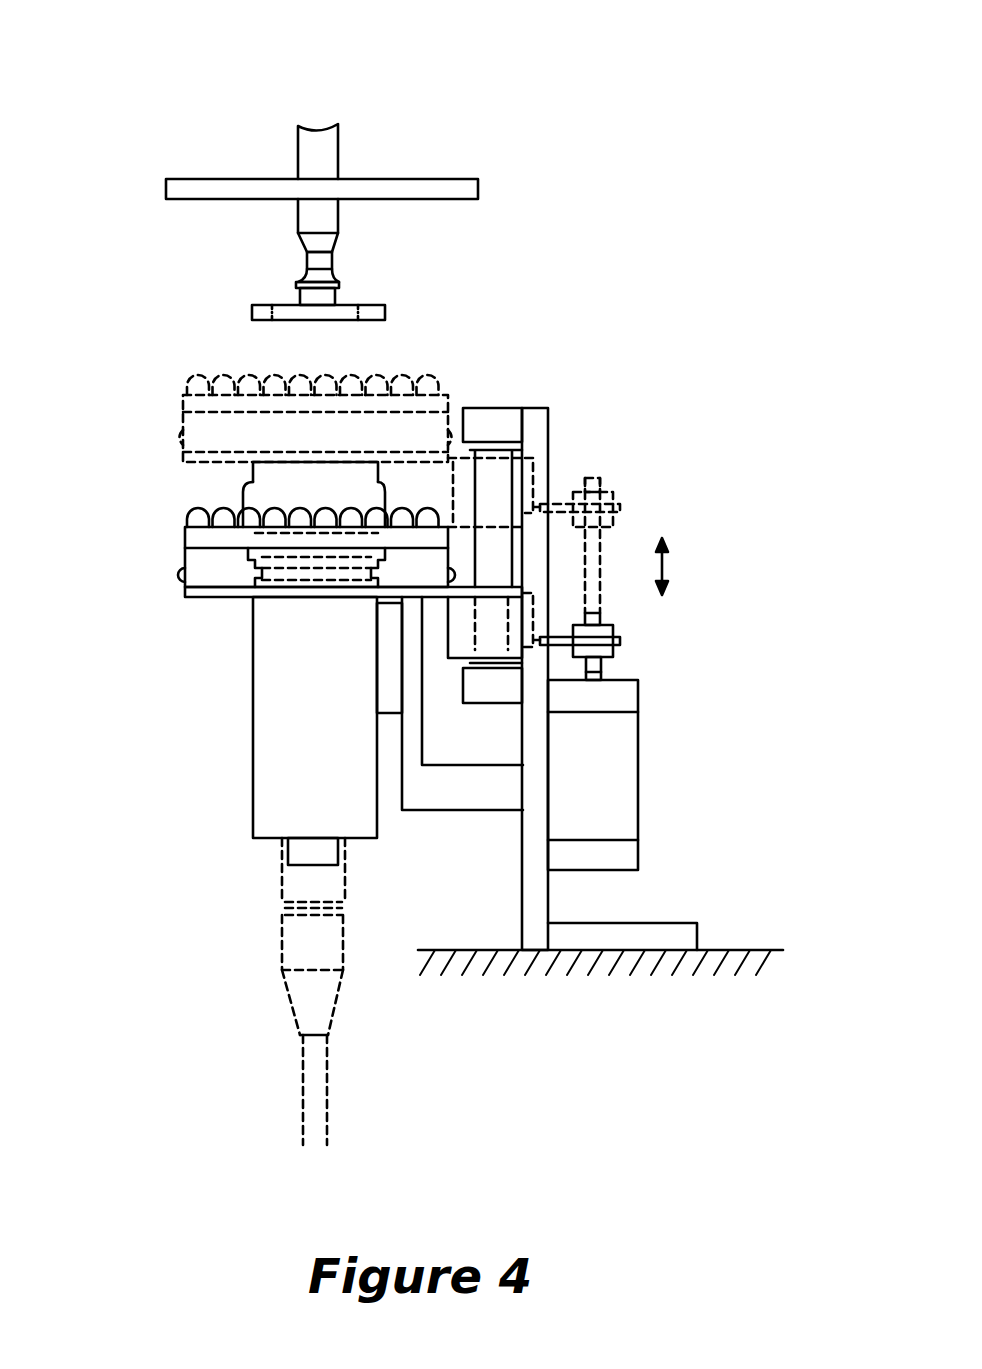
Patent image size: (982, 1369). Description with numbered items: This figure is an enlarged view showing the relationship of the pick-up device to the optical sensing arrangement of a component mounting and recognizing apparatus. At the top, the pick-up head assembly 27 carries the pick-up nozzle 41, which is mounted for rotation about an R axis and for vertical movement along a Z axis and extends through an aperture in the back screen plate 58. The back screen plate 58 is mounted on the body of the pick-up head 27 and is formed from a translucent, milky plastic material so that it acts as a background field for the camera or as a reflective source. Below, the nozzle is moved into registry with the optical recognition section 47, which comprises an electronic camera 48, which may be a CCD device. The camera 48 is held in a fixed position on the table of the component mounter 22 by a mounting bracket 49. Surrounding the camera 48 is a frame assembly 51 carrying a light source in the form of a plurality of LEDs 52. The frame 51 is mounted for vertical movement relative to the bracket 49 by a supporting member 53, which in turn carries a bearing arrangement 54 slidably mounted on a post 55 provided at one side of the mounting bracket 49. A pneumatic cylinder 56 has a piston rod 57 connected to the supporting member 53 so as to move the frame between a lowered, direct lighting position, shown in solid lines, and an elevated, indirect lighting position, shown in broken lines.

The component mounter 22 is at (750, 950).
The pick-up head assembly 27 is at (397, 134).
The pick-up nozzle 41 is at (307, 153).
The optical recognition section 47 is at (560, 355).
The electronic camera 48 is at (272, 725).
The mounting bracket 49 is at (532, 842).
The frame assembly 51 is at (197, 557).
The LEDs 52 is at (195, 510).
The supporting member 53 is at (203, 598).
The bearing arrangement 54 is at (463, 630).
The post 55 is at (503, 477).
The pneumatic cylinder 56 is at (623, 767).
The piston rod 57 is at (602, 663).
The back screen plate 58 is at (455, 179).